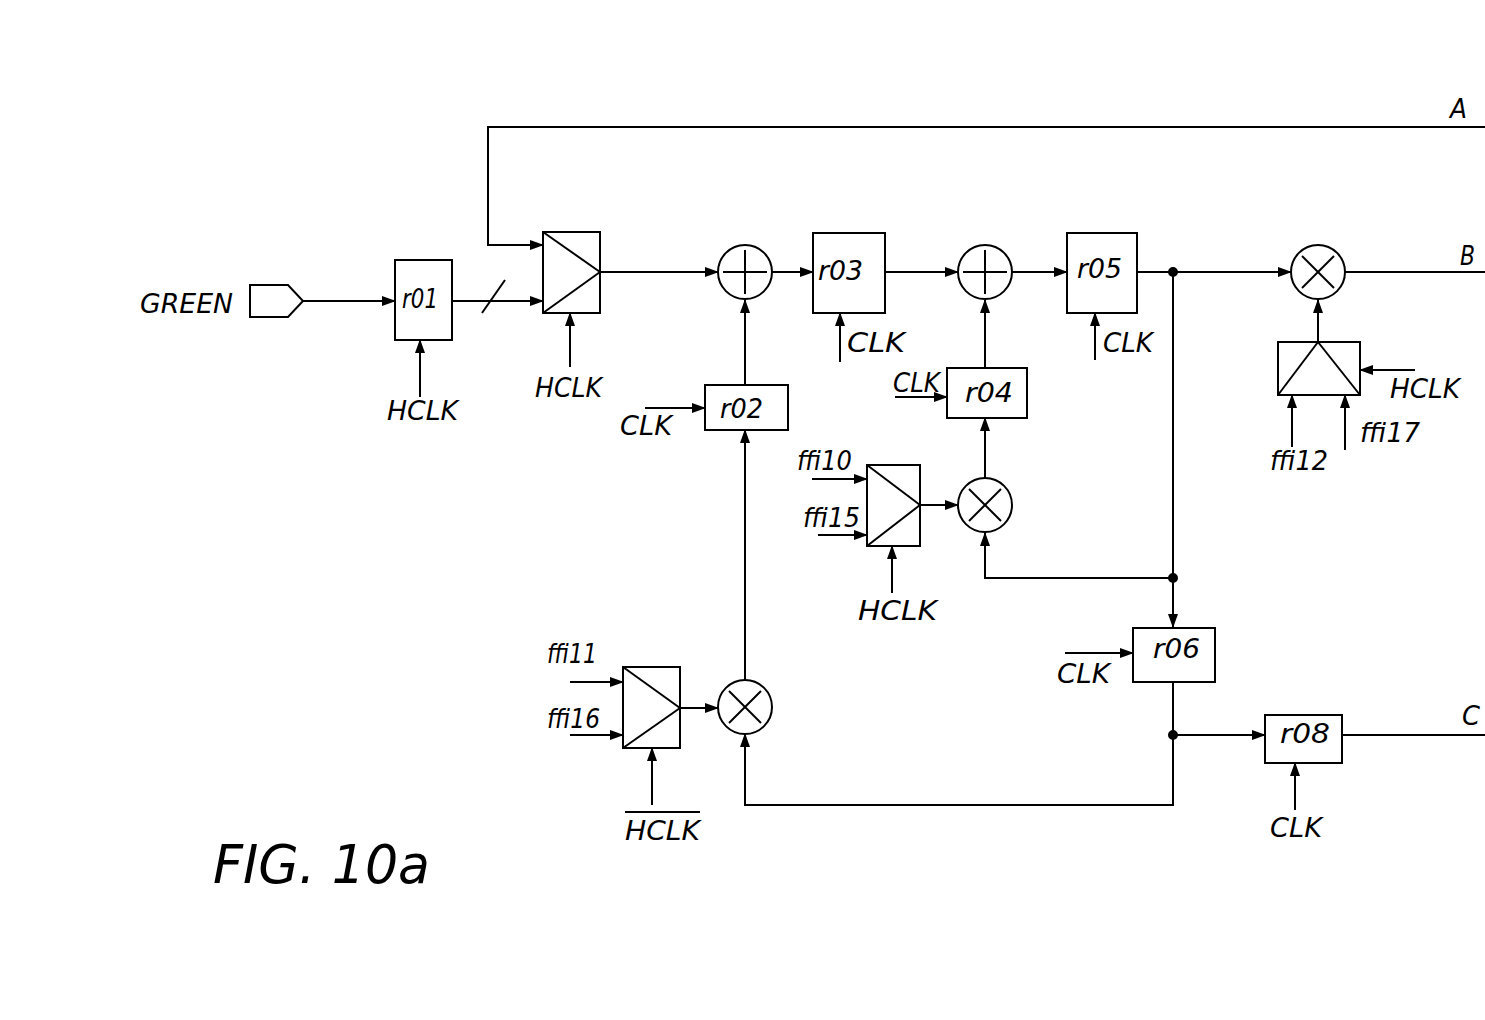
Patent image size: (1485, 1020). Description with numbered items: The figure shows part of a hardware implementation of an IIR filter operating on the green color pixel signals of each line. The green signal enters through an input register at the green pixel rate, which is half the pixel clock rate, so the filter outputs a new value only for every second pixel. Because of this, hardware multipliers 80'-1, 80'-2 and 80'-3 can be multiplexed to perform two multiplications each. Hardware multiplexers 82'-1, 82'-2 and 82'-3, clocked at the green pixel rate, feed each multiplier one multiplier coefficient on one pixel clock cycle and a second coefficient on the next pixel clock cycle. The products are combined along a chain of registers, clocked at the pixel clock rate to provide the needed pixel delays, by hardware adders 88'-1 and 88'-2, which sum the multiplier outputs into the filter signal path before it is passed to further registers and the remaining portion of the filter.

The hardware adder 88'-1 is at (759, 249).
The hardware adder 88'-2 is at (1006, 247).
The hardware multiplier 80'-1 is at (1031, 498).
The hardware multiplier 80'-2 is at (799, 704).
The hardware multiplier 80'-3 is at (1349, 248).
The hardware multiplexer 82'-1 is at (897, 482).
The hardware multiplexer 82'-2 is at (653, 677).
The hardware multiplexer 82'-3 is at (1286, 368).